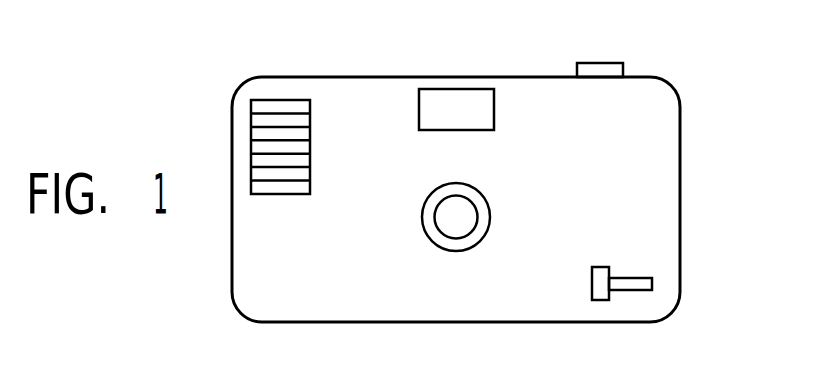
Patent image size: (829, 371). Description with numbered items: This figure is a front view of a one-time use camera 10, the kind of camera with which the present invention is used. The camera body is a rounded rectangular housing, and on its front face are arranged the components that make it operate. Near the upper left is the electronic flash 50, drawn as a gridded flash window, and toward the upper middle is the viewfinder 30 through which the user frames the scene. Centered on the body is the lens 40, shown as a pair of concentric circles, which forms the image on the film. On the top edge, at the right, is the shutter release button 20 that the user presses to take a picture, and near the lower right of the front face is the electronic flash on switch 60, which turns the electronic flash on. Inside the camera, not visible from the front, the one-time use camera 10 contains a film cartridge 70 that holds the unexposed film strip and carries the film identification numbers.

The one-time use camera 10 is at (681, 170).
The shutter release button 20 is at (616, 63).
The viewfinder 30 is at (477, 89).
The lens 40 is at (470, 200).
The electronic flash 50 is at (297, 100).
The electronic flash on switch 60 is at (616, 276).
The film cartridge 70 is at (40, 365).